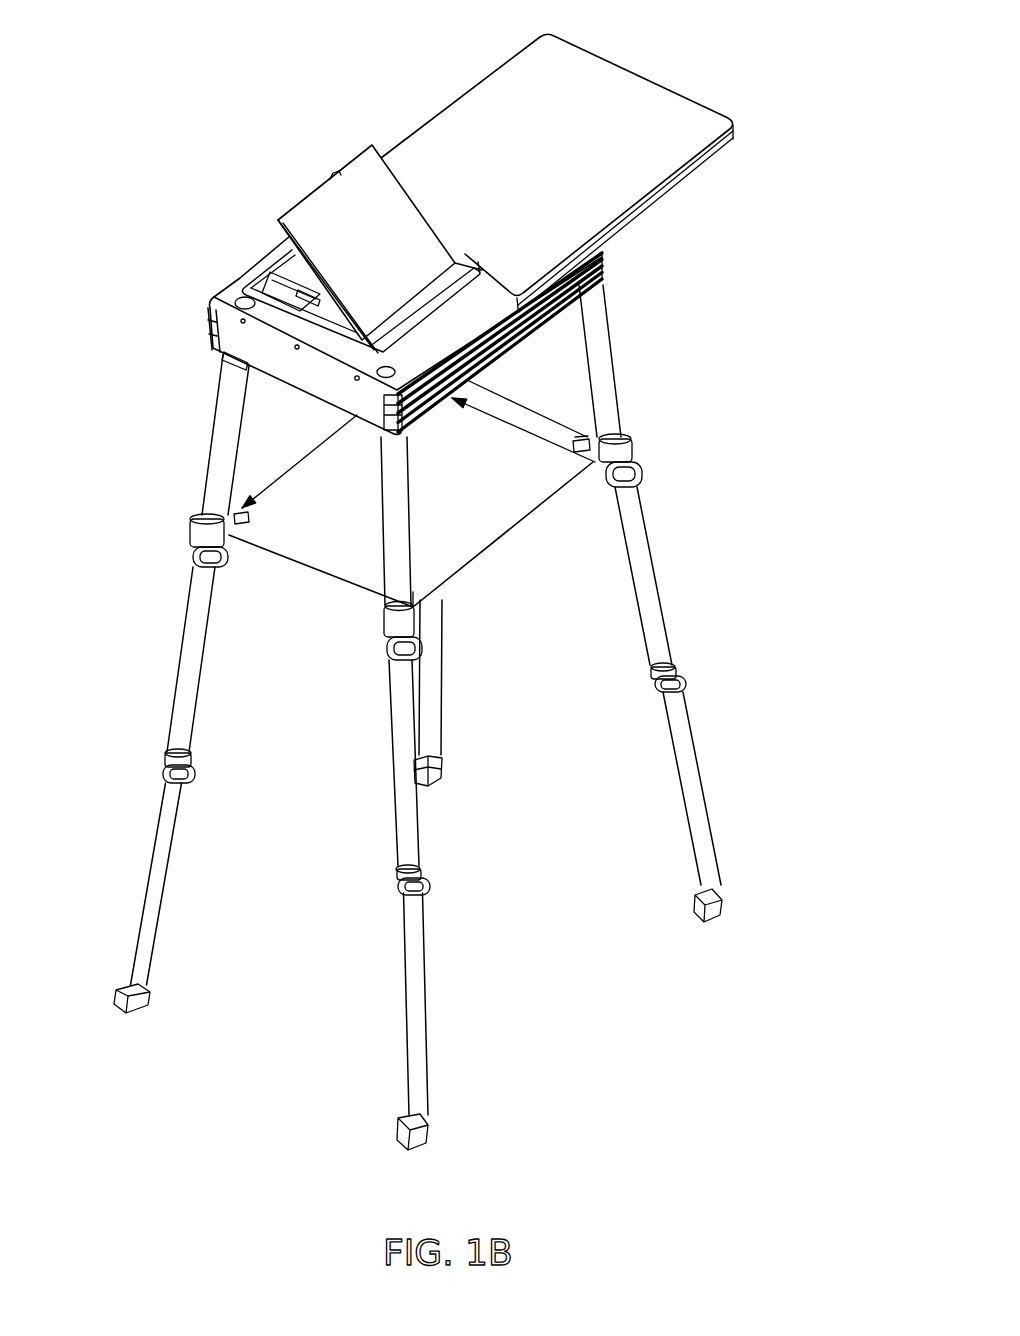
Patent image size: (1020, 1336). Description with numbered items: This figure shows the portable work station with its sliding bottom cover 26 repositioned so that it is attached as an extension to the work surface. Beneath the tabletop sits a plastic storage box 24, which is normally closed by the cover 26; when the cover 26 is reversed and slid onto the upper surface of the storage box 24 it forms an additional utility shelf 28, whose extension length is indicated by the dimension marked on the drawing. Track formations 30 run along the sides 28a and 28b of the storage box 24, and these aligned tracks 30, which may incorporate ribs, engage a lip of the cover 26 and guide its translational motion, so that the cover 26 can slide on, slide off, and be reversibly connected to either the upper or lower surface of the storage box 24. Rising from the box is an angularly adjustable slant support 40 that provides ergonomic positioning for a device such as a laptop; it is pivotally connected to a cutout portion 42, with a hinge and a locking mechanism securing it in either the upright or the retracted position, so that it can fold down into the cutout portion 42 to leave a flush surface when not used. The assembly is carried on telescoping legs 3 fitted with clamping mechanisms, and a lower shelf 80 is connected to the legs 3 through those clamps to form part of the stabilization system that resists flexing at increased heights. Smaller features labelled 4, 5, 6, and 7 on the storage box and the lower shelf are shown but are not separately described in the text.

The leg 3 is at (432, 710).
The hole 4 is at (362, 376).
The slot 5 is at (323, 308).
The leg mount 6 is at (255, 345).
The shelf 7 is at (347, 557).
The storage box 24 is at (363, 333).
The bottom cover 26 is at (645, 170).
The utility shelf 28 is at (518, 19).
The side 28a is at (583, 442).
The side 28b is at (213, 268).
The track formations 30 is at (590, 274).
The slant support 40 is at (308, 195).
The cutout portion 42 is at (343, 302).
The shelf 80 is at (469, 514).